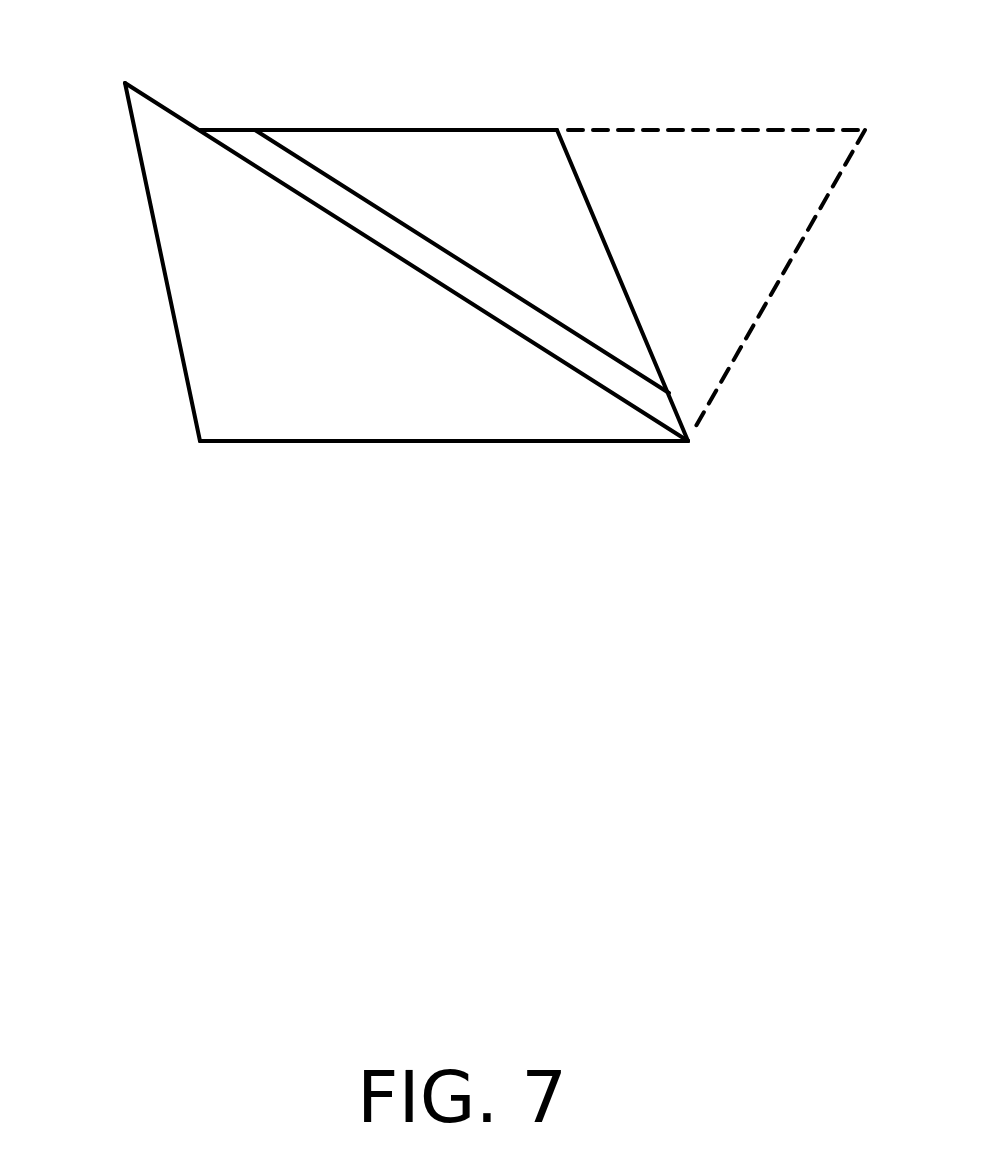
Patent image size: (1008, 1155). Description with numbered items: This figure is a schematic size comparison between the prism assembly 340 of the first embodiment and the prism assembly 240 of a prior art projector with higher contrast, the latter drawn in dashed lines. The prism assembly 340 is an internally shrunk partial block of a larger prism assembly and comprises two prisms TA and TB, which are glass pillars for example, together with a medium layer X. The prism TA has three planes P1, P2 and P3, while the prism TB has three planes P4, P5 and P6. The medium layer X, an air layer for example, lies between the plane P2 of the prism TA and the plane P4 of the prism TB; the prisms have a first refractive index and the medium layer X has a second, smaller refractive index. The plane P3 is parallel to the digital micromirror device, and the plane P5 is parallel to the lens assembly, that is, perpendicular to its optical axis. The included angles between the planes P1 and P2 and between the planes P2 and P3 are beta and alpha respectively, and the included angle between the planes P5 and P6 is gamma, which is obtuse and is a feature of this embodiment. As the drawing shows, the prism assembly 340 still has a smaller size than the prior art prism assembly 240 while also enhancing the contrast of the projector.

The prism assembly 340 is at (447, 249).
The prism assembly 240 is at (735, 110).
The plane P1 is at (147, 195).
The plane P2 is at (582, 375).
The plane P3 is at (215, 440).
The plane P4 is at (417, 231).
The plane P5 is at (487, 128).
The plane P6 is at (614, 263).
The prism TA is at (250, 335).
The prism TB is at (584, 329).
The medium layer X is at (694, 427).